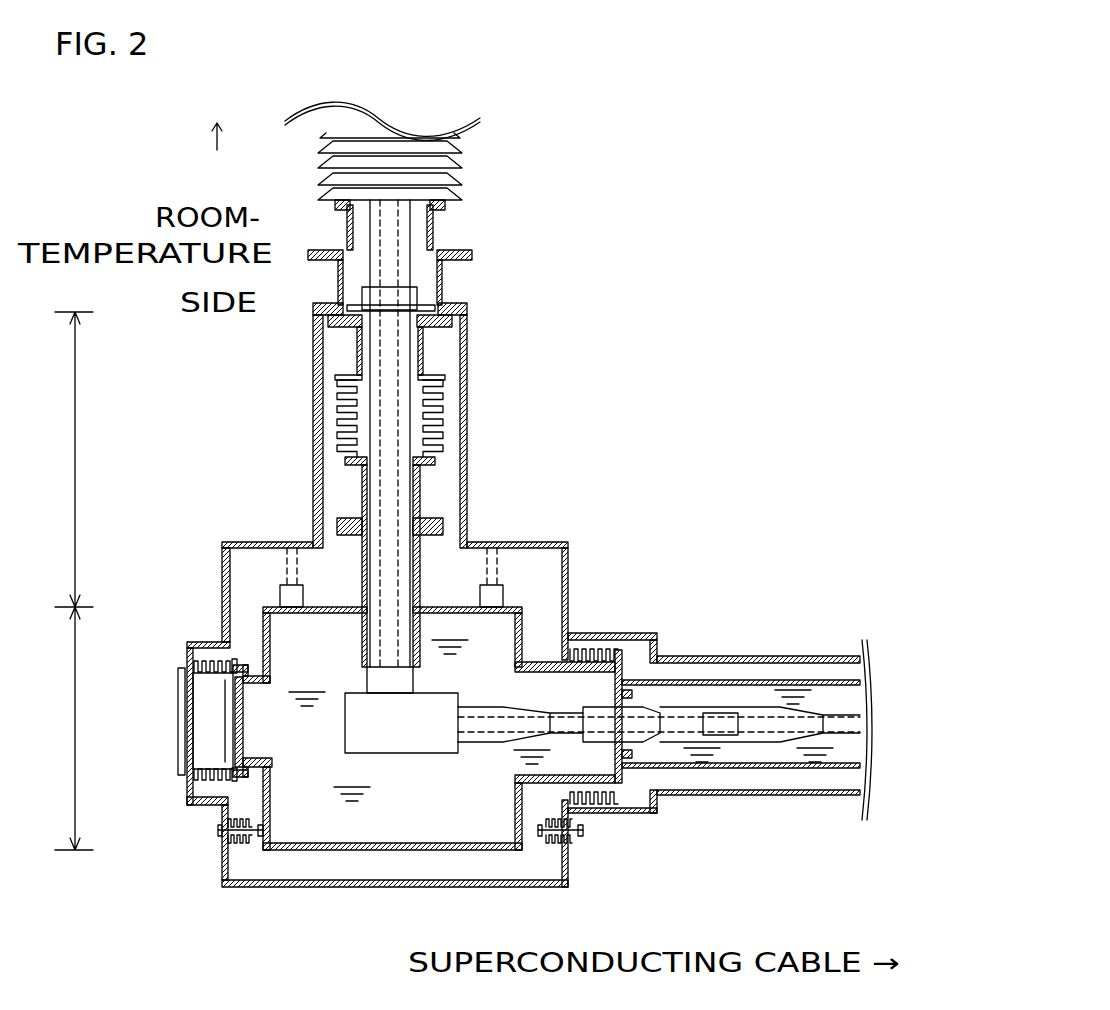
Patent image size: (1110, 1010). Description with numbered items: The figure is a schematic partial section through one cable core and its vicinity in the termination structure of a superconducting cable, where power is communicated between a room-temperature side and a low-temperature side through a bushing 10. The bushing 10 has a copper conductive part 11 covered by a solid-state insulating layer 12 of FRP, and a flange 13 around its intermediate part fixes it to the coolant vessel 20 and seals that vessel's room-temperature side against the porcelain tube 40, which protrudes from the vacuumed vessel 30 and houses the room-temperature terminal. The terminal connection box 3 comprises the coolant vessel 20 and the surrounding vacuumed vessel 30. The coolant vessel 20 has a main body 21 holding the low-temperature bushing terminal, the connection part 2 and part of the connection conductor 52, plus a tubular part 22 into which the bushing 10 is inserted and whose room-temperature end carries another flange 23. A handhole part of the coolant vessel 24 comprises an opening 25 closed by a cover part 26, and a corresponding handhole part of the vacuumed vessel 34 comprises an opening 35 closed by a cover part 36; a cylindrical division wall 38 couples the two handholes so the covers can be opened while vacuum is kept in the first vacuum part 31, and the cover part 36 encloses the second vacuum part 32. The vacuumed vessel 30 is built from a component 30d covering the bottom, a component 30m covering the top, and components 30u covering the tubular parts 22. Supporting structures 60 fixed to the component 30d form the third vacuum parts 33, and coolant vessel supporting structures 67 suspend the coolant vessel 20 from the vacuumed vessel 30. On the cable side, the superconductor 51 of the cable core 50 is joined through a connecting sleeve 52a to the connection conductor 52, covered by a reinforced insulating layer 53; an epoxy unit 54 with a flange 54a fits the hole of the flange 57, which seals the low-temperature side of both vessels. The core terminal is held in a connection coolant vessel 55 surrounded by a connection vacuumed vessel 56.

The connection part 2 is at (395, 755).
The terminal connection box 3 is at (560, 455).
The bushing 10 is at (531, 305).
The conductive part 11 is at (417, 372).
The solid-state insulating layer 12 is at (400, 378).
The flange 13 is at (410, 305).
The coolant vessel 20 is at (447, 602).
The main body 21 is at (88, 728).
The tubular part 22 is at (88, 459).
The flange 23 is at (313, 338).
The handhole part of the coolant vessel 24 is at (325, 942).
The opening 25 is at (250, 763).
The cover part 26 is at (243, 757).
The vacuumed vessel 30 is at (482, 494).
The component of the vacuumed vessel 30u is at (313, 478).
The component of the vacuumed vessel 30m is at (222, 565).
The component of the vacuumed vessel 30d is at (237, 893).
The first vacuum part 31 is at (538, 572).
The second vacuum part 32 is at (210, 695).
The third vacuum part 33 is at (223, 860).
The handhole part of the vacuumed vessel 34 is at (152, 823).
The opening 35 is at (177, 747).
The cover part 36 is at (177, 770).
The division wall 38 is at (197, 645).
The porcelain tube 40 is at (462, 195).
The cable core 50 is at (835, 792).
The superconductor 51 is at (780, 745).
The connection conductor 52 is at (468, 740).
The connecting sleeve 52a is at (722, 737).
The reinforced insulating layer 53 is at (688, 705).
The epoxy unit 54 is at (650, 710).
The flange 54a is at (622, 778).
The connection coolant vessel 55 is at (767, 680).
The connection vacuumed vessel 56 is at (577, 633).
The flange 57 is at (620, 667).
The supporting structure 60 is at (220, 843).
The coolant vessel supporting structure 67 is at (287, 570).